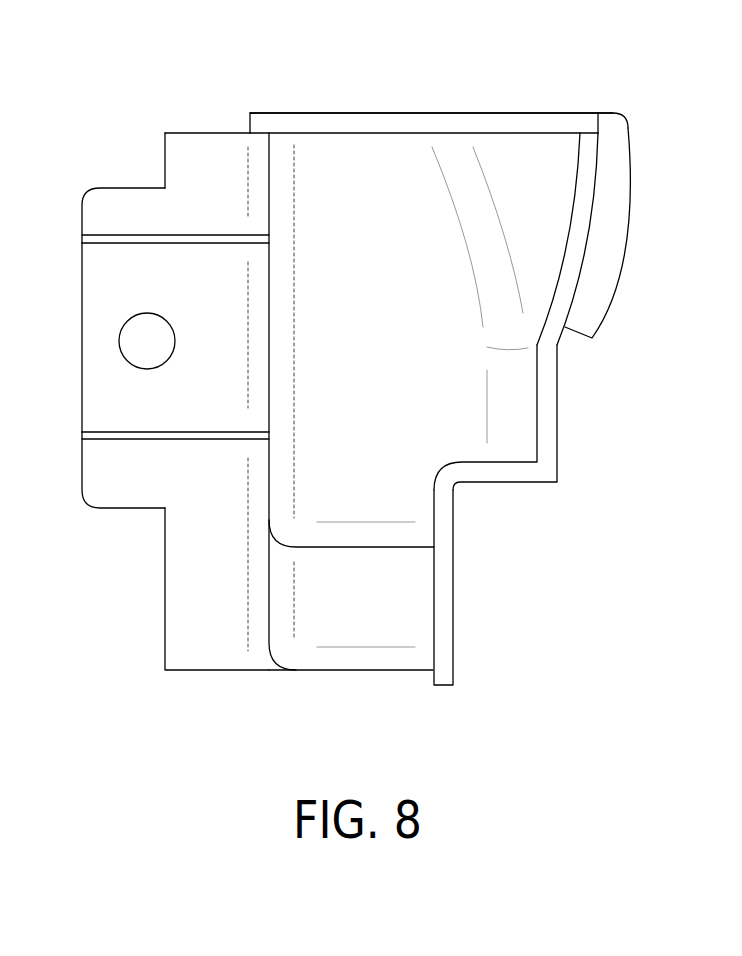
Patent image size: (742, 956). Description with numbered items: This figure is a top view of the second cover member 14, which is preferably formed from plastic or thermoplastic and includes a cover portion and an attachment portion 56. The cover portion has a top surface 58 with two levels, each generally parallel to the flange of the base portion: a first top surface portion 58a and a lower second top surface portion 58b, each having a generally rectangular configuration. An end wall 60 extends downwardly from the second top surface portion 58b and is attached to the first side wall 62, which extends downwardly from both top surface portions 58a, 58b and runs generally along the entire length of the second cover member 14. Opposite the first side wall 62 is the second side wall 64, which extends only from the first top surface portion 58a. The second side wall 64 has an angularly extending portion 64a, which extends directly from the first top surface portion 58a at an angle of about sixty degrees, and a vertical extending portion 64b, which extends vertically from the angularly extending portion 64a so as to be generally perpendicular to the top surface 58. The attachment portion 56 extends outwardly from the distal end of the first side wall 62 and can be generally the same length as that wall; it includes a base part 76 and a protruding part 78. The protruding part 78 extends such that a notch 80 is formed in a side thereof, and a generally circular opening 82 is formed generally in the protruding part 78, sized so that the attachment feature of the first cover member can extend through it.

The second cover member 14 is at (410, 104).
The attachment portion 56 is at (112, 203).
The top surface 58 is at (520, 158).
The first top surface portion 58a is at (412, 410).
The second top surface portion 58b is at (403, 601).
The end wall 60 is at (370, 670).
The first side wall 62 is at (270, 198).
The second side wall 64 is at (592, 224).
The angularly extending portion 64a is at (458, 168).
The vertical extending portion 64b is at (562, 157).
The base part 76 is at (207, 645).
The protruding part 78 is at (123, 488).
The notch 80 is at (143, 183).
The opening 82 is at (143, 362).